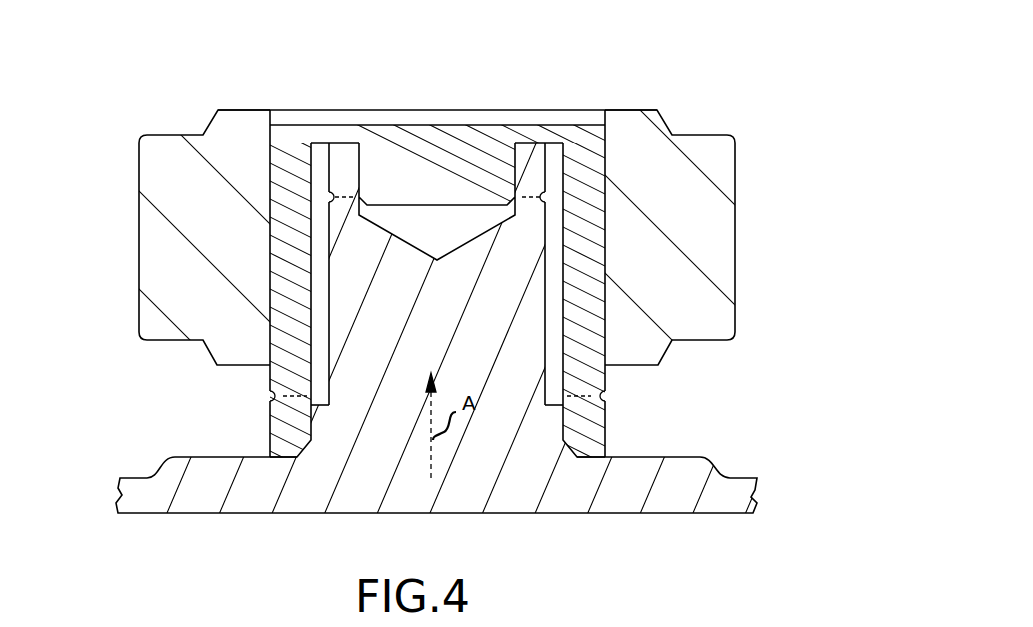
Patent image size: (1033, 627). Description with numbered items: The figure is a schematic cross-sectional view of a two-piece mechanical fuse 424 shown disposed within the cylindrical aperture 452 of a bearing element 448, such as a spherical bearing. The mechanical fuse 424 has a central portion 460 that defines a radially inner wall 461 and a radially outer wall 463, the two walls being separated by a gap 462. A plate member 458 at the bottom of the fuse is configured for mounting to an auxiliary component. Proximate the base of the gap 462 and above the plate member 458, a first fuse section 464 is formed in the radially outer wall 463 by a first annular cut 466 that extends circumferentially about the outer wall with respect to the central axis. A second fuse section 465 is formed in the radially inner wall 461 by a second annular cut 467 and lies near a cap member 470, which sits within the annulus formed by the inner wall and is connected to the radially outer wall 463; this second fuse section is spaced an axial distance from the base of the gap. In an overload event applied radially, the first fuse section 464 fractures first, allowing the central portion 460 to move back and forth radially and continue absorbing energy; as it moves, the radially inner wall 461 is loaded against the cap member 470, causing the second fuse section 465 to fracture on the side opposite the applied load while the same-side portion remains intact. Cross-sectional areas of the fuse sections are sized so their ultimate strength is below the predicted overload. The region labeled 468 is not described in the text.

The mechanical fuse 424 is at (131, 128).
The bearing element 448 is at (728, 247).
The cylindrical aperture 452 is at (607, 182).
The plate member 458 is at (745, 498).
The central portion 460 is at (382, 247).
The radially inner wall 461 is at (528, 155).
The gap 462 is at (553, 186).
The radially outer wall 463 is at (592, 138).
The first fuse section 464 is at (297, 397).
The second fuse section 465 is at (345, 195).
The first annular cut 466 is at (266, 393).
The second annular cut 467 is at (323, 193).
The groove 468 is at (534, 160).
The cap member 470 is at (427, 160).